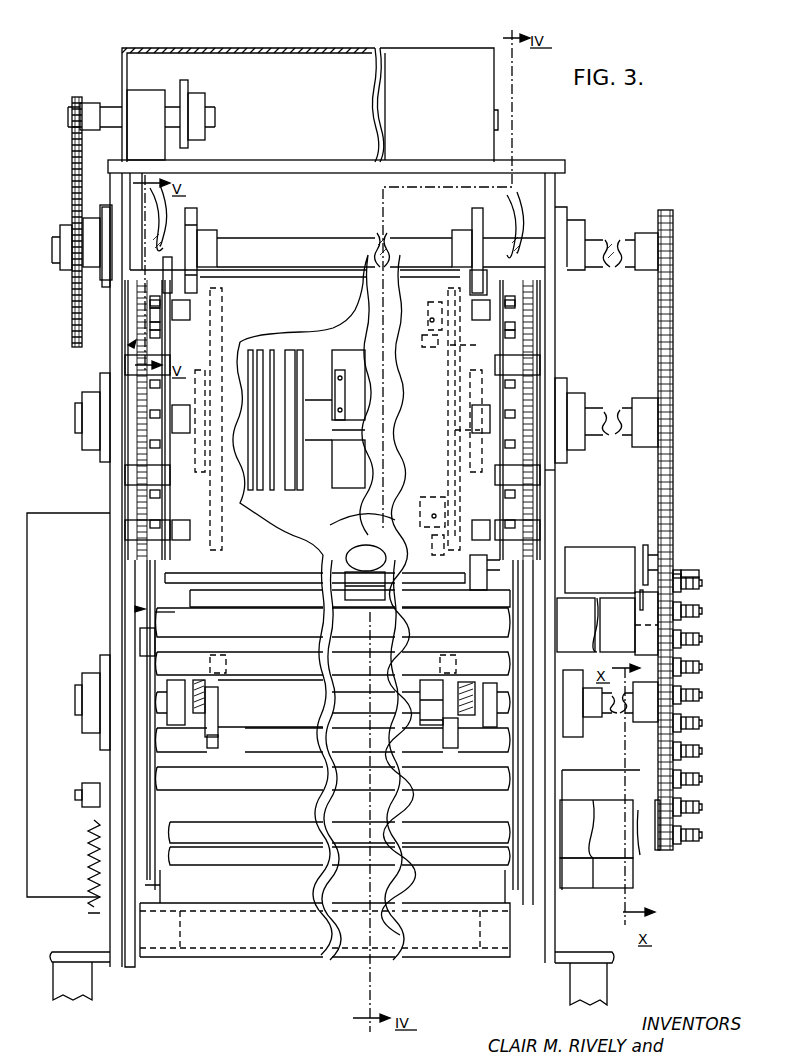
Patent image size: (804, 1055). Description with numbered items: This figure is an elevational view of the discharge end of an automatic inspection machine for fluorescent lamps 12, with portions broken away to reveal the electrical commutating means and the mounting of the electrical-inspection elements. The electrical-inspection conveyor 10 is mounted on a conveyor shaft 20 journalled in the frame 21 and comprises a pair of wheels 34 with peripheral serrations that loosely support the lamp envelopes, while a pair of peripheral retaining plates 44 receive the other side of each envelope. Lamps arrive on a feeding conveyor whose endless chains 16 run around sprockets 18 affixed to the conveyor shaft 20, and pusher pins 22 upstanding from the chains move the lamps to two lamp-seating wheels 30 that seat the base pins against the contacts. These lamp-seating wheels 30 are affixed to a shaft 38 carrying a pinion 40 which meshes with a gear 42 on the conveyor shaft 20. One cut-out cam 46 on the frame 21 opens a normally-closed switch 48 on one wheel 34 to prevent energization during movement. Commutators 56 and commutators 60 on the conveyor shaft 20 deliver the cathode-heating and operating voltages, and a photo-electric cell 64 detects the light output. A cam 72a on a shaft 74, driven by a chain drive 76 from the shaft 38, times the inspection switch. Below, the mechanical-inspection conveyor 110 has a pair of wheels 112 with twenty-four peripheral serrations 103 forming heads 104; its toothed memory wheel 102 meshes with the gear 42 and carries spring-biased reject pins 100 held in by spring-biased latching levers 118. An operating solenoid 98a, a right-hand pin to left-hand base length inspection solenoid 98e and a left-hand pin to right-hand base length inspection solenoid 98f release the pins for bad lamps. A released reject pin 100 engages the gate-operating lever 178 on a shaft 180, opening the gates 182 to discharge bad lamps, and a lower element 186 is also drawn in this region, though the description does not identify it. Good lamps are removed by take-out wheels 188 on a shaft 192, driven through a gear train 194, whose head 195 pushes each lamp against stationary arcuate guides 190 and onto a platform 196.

The electrical-inspection conveyor 10 is at (132, 343).
The fluorescent lamps 12 is at (292, 600).
The endless chains 16 is at (550, 310).
The sprockets 18 is at (550, 329).
The conveyor shaft 20 is at (75, 418).
The frame 21 is at (110, 480).
The pusher pins 22 is at (160, 310).
The lamp-seating wheels 30 is at (456, 217).
The wheels 34 is at (222, 300).
The shaft 38 is at (52, 249).
The pinion 40 is at (673, 250).
The gear 42 is at (658, 368).
The peripheral retaining plates 44 is at (168, 488).
The cut-out cam 46 is at (430, 306).
The normally-closed switch 48 is at (430, 346).
The commutators 56 is at (284, 492).
The commutators 60 is at (268, 336).
The photo-electric cell 64 is at (345, 546).
The cam 72a is at (188, 80).
The shaft 74 is at (68, 118).
The chain drive 76 is at (72, 178).
The operating solenoid 98a is at (591, 547).
The right-hand pin to left-hand base length inspection solenoid 98e is at (608, 890).
The left-hand pin to right-hand base length inspection solenoid 98f is at (606, 840).
The spring-biased reject pins 100 is at (700, 574).
The toothed memory wheel 102 is at (668, 852).
The peripheral serrations 103 is at (200, 597).
The head 104 is at (475, 577).
The mechanical-inspection conveyor 110 is at (133, 612).
The wheels 112 is at (201, 623).
The spring-biased latching lever 118 is at (645, 543).
The gate-operating lever 178 is at (620, 775).
The shaft 180 is at (75, 797).
The gates 182 is at (202, 799).
The roller 186 is at (182, 880).
The take-out wheels 188 is at (218, 740).
The stationary arcuate guides 190 is at (141, 642).
The shaft 192 is at (75, 708).
The gear train 194 is at (647, 654).
The head 195 is at (442, 726).
The platform 196 is at (220, 676).